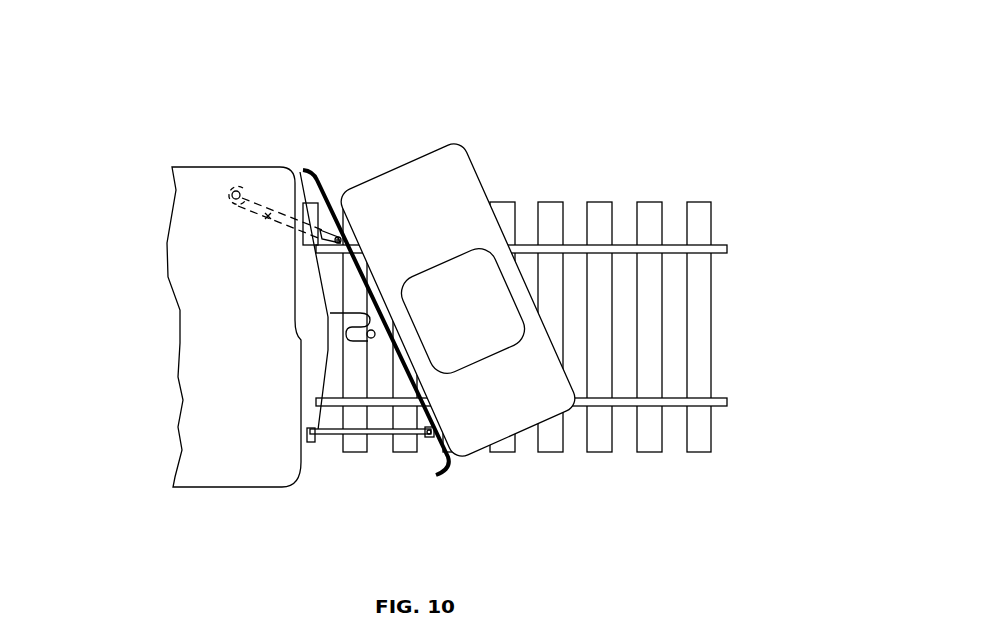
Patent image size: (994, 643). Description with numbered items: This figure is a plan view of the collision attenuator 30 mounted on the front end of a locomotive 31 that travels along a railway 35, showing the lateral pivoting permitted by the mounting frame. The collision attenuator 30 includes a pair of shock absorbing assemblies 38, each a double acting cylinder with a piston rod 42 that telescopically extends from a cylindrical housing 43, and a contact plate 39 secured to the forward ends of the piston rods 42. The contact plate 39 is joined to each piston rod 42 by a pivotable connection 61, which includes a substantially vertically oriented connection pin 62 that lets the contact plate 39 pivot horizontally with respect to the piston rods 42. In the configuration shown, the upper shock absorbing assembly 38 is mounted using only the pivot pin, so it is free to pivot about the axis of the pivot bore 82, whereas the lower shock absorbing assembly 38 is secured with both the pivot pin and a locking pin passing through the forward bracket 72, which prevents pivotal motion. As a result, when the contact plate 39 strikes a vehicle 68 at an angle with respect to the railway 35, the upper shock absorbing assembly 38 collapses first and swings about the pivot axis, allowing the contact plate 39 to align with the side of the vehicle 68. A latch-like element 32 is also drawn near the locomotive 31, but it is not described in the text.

The collision attenuator 30 is at (352, 88).
The locomotive 31 is at (202, 167).
The latch catch 32 is at (332, 325).
The railway 35 is at (573, 246).
The shock absorbing assembly 38 is at (332, 440).
The contact plate 39 is at (323, 182).
The piston rod 42 is at (300, 174).
The cylindrical housing 43 is at (268, 218).
The pivotable connection 61 is at (334, 246).
The connection pin 62 is at (341, 236).
The vehicle 68 is at (458, 142).
The forward bracket 72 is at (227, 203).
The pivot bore 82 is at (242, 190).